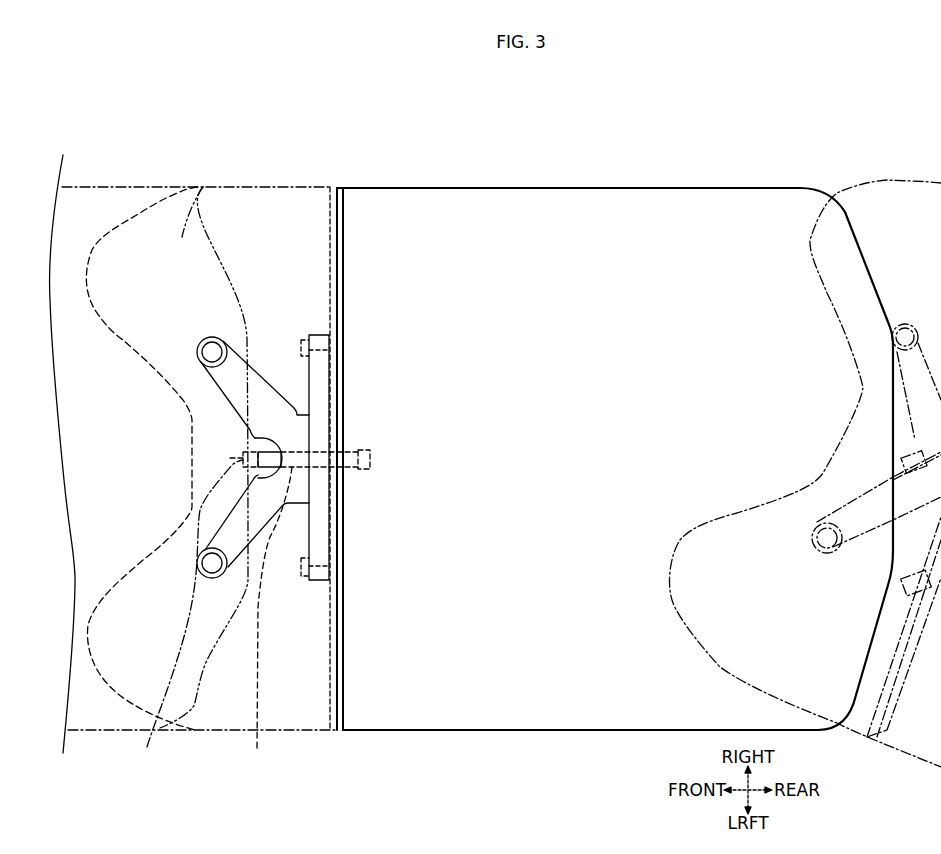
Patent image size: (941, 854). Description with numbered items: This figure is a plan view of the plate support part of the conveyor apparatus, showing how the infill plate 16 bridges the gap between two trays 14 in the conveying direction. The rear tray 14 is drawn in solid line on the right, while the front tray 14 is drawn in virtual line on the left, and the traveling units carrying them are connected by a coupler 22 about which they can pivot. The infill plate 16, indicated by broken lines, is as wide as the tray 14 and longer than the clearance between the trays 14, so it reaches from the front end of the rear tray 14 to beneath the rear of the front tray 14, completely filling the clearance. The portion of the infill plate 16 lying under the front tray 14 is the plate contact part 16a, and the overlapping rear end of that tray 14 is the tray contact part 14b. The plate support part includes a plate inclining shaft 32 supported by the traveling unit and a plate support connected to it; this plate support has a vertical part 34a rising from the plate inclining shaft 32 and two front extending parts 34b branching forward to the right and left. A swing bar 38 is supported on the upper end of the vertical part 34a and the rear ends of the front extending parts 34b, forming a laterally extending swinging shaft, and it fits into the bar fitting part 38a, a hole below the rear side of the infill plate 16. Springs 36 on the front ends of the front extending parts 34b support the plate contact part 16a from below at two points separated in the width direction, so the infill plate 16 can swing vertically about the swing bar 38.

The tray 14 is at (102, 187).
The tray contact part 14b is at (203, 187).
The infill plate 16 is at (263, 187).
The plate contact part 16a is at (128, 243).
The coupler 22 is at (147, 747).
The plate inclining shaft 32 is at (240, 452).
The vertical part 34a is at (298, 410).
The front extending parts 34b is at (219, 383).
The springs 36 is at (212, 337).
The swing bar 38 is at (317, 335).
The bar fitting part 38a is at (305, 570).